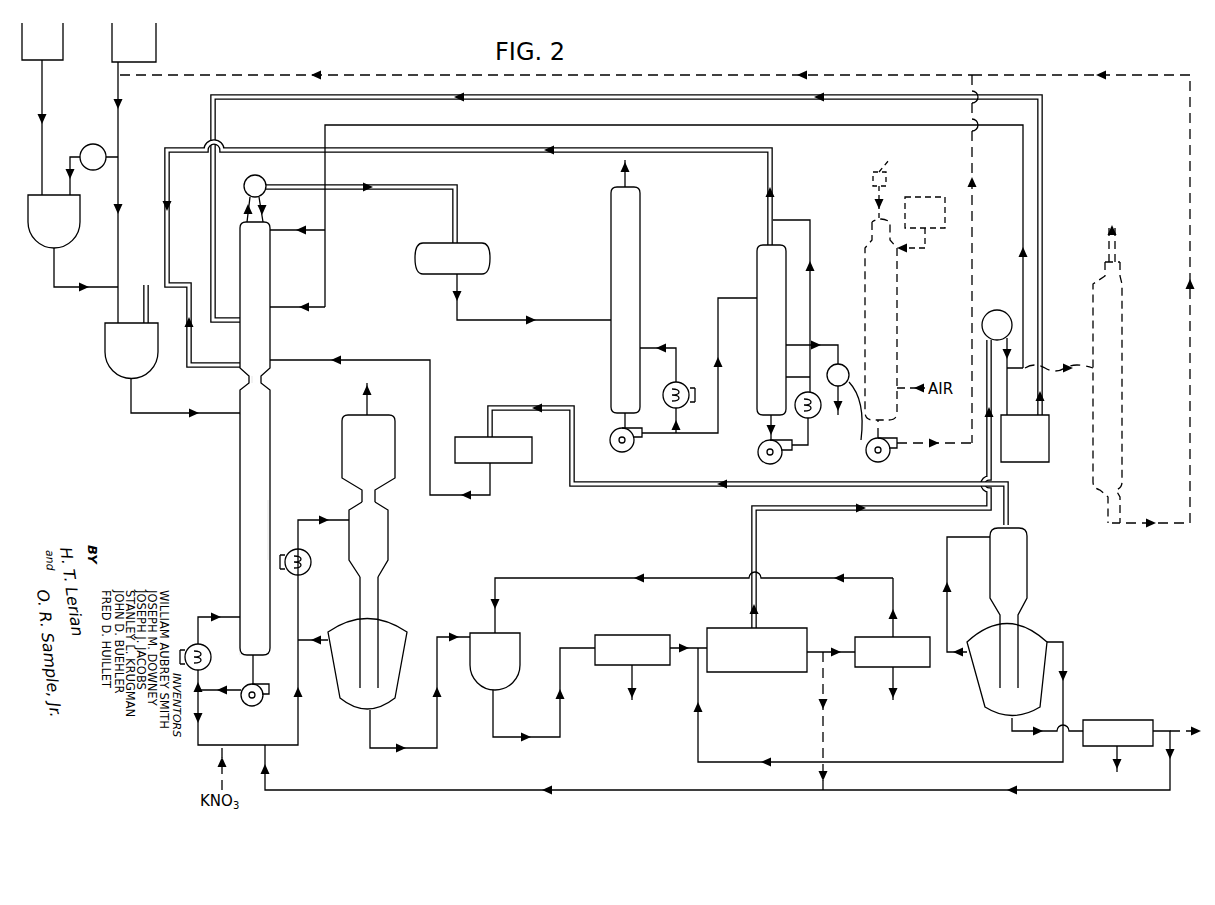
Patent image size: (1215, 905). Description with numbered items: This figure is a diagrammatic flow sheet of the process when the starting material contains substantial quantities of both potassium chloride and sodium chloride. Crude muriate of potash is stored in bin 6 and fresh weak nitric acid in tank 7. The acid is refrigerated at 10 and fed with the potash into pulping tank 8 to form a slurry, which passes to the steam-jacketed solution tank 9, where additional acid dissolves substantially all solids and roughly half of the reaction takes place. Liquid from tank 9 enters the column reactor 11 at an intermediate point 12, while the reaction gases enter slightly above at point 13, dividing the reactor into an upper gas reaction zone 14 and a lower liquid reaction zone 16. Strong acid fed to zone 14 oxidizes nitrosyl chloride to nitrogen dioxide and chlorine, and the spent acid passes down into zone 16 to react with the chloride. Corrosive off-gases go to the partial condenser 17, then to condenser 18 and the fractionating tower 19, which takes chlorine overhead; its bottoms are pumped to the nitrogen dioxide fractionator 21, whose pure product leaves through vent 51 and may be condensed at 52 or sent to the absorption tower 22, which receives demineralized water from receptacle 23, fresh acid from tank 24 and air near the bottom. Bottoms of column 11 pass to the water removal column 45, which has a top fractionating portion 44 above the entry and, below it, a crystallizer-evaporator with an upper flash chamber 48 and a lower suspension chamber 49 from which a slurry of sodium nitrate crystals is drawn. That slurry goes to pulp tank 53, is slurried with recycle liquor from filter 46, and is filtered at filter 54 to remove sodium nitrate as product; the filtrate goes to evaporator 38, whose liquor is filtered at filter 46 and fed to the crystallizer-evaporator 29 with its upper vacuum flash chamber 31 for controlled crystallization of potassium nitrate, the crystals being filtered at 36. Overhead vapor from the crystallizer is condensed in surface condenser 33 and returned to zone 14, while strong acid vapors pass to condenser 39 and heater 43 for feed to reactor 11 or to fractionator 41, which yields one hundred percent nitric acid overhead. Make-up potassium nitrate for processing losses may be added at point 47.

The bin 6 is at (63, 44).
The tank 7 is at (156, 38).
The pulping tank 8 is at (38, 245).
The solution tank 9 is at (110, 372).
The acid refrigerator 10 is at (90, 144).
The column reactor 11 is at (238, 493).
The intermediate point 12 is at (240, 415).
The gas introduction point 13 is at (240, 372).
The upper gas reaction zone 14 is at (270, 343).
The lower liquid reaction zone 16 is at (252, 535).
The partial condenser 17 is at (264, 180).
The condenser 18 is at (462, 247).
The fractionating tower 19 is at (620, 242).
The nitrogen dioxide fractionator 21 is at (757, 268).
The nitric acid absorption tower 22 is at (897, 288).
The receptacle 23 is at (886, 180).
The tank 24 is at (945, 212).
The crystallizer-evaporator 29 is at (1024, 612).
The upper vacuum flash chamber 31 is at (1012, 563).
The surface condenser 33 is at (470, 443).
The filter 36 is at (1095, 720).
The evaporator 38 is at (765, 630).
The condenser 39 is at (995, 310).
The fractionator 41 is at (1122, 292).
The heater 43 is at (1035, 462).
The top column portion 44 is at (380, 428).
The water removal column 45 is at (392, 527).
The filter 46 is at (905, 637).
The makeup addition point 47 is at (215, 748).
The upper flash chamber 48 is at (375, 556).
The lower suspension chamber 49 is at (392, 622).
The vent 51 is at (788, 343).
The nitrogen dioxide condenser 52 is at (868, 451).
The pulp tank 53 is at (505, 640).
The filter 54 is at (612, 637).